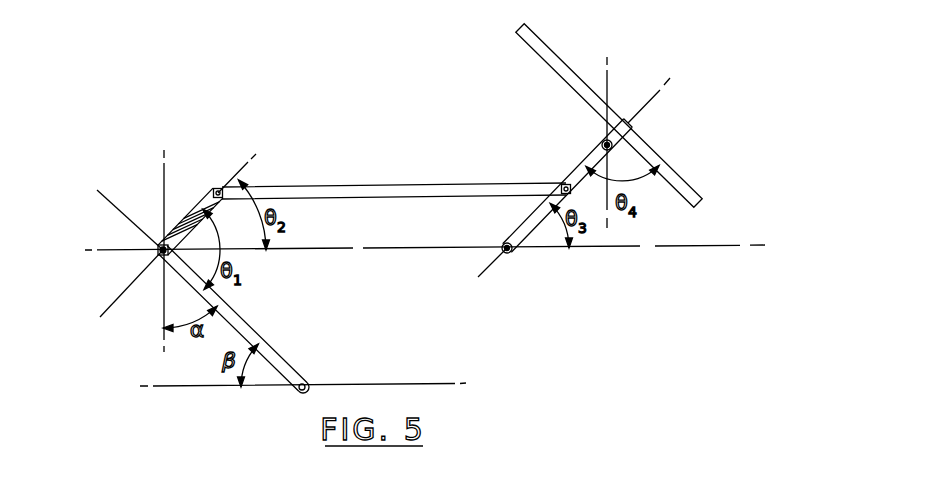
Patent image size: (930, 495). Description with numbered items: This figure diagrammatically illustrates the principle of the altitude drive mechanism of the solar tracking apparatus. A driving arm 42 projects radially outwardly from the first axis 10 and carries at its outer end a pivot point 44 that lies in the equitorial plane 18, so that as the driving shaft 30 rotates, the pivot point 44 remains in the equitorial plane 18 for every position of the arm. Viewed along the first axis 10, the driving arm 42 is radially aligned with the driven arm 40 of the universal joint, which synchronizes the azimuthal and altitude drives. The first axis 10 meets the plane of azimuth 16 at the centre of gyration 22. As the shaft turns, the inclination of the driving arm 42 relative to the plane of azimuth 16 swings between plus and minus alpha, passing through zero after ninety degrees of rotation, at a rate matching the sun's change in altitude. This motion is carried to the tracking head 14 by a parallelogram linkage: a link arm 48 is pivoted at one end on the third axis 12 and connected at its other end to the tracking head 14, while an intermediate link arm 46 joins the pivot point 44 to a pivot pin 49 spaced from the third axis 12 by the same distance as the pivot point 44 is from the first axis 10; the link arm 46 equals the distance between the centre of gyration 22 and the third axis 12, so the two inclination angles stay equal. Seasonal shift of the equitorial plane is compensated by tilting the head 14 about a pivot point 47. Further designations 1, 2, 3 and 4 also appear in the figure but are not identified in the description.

The second link 1 is at (257, 312).
The first link assembly 2 is at (145, 143).
The connecting rod 3 is at (392, 158).
The fourth link assembly 4 is at (677, 128).
The first axis 10 is at (106, 194).
The third axis 12 is at (511, 252).
The tracking head 14 is at (566, 64).
The plane of azimuth 16 is at (388, 248).
The equitorial plane 18 is at (112, 302).
The centre of gyration 22 is at (160, 252).
The driving shaft 30 is at (287, 361).
The driven arm 40 is at (160, 248).
The driving arm 42 is at (203, 193).
The pivot point 44 is at (218, 188).
The intermediate link arm 46 is at (460, 186).
The pivot point 47 is at (600, 136).
The link arm 48 is at (587, 150).
The pivot pin 49 is at (562, 186).